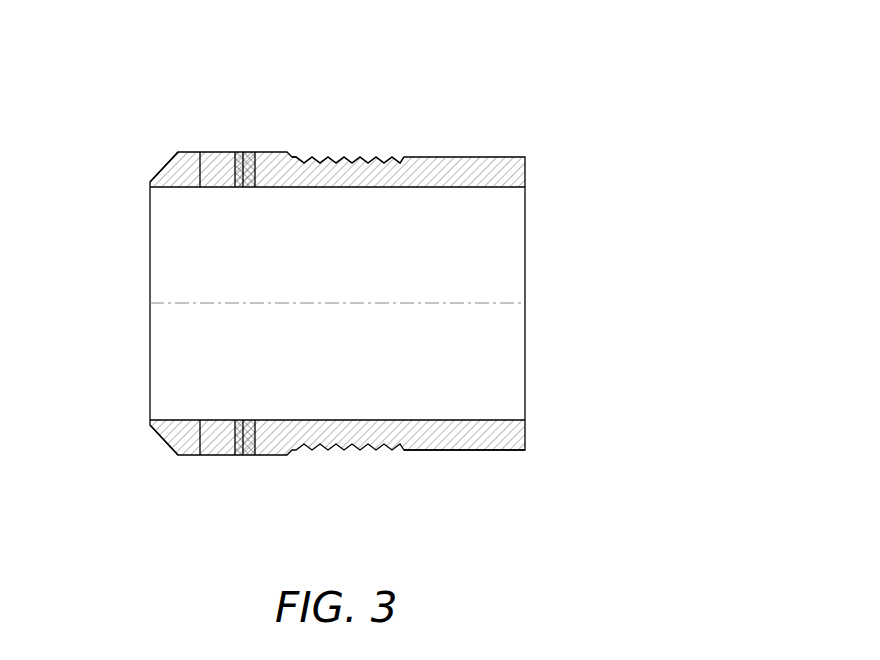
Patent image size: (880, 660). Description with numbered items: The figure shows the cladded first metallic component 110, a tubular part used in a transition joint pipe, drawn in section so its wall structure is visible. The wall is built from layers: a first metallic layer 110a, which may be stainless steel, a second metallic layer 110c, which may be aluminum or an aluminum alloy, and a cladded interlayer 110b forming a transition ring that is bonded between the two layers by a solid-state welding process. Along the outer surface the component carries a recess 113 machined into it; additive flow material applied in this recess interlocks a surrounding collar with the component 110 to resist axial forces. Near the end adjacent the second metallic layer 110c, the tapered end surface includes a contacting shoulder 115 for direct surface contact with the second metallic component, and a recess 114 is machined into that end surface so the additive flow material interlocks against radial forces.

The cladded first metallic component 110 is at (555, 112).
The first metallic layer 110a is at (478, 450).
The cladded interlayer 110b is at (222, 457).
The second metallic layer 110c is at (177, 432).
The recess 113 is at (352, 163).
The recess 114 is at (169, 162).
The contacting shoulder 115 is at (150, 183).